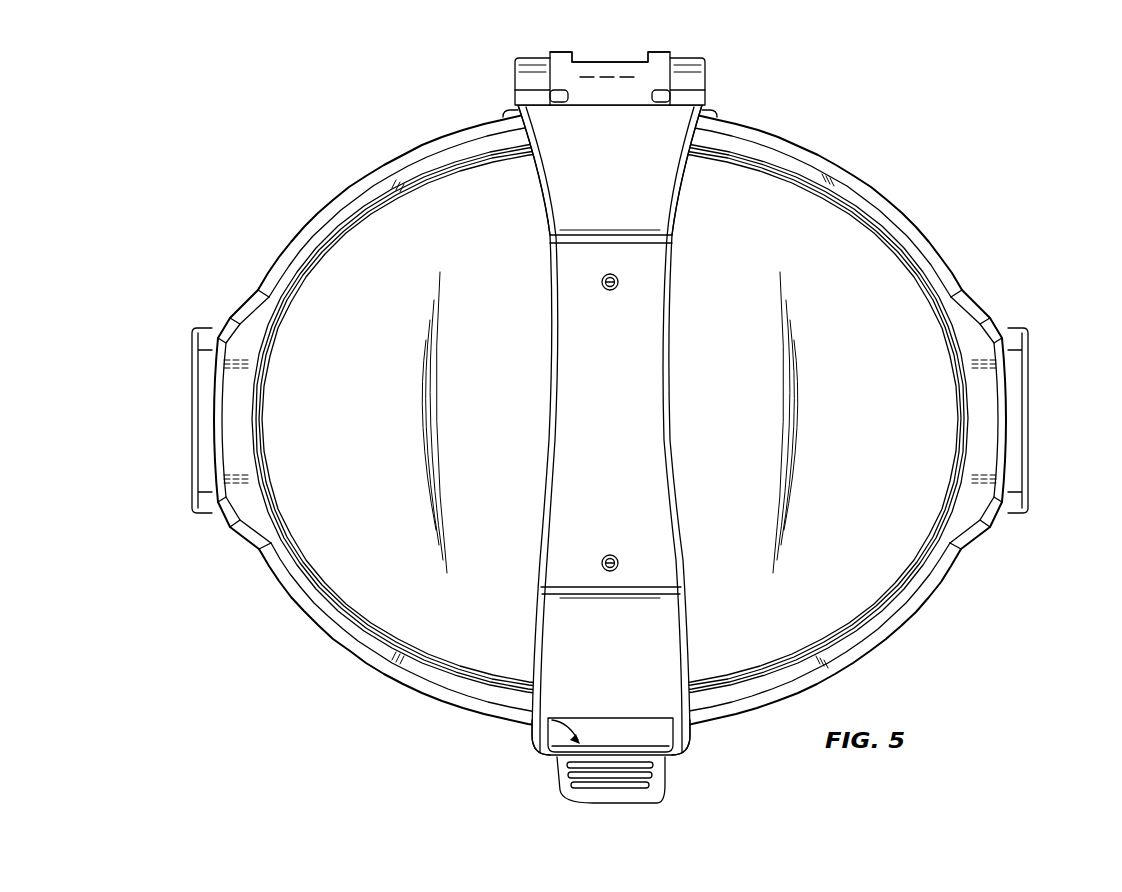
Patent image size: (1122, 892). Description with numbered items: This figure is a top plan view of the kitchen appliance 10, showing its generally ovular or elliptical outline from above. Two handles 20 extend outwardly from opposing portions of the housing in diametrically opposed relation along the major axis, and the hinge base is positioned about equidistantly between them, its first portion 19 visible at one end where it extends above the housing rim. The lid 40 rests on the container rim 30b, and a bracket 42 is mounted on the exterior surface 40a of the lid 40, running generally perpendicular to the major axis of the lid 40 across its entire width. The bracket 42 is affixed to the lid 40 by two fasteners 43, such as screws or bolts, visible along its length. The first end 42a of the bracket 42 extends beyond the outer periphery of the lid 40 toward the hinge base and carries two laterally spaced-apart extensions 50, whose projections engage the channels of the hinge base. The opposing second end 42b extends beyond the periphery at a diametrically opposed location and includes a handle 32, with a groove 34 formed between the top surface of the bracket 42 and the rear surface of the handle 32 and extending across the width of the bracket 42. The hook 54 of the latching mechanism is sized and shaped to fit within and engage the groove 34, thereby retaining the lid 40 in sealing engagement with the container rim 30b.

The kitchen appliance 10 is at (866, 101).
The first portion of the hinge base 19 is at (597, 70).
The handle 20 is at (192, 402).
The container rim 30b is at (898, 232).
The handle 32 is at (625, 797).
The groove 34 is at (548, 728).
The lid 40 is at (612, 418).
The exterior surface of the lid 40a is at (862, 560).
The bracket 42 is at (652, 430).
The first end of the bracket 42a is at (705, 128).
The second end of the bracket 42b is at (690, 735).
The fastener 43 is at (601, 283).
The extension 50 is at (527, 82).
The hook 54 is at (672, 752).